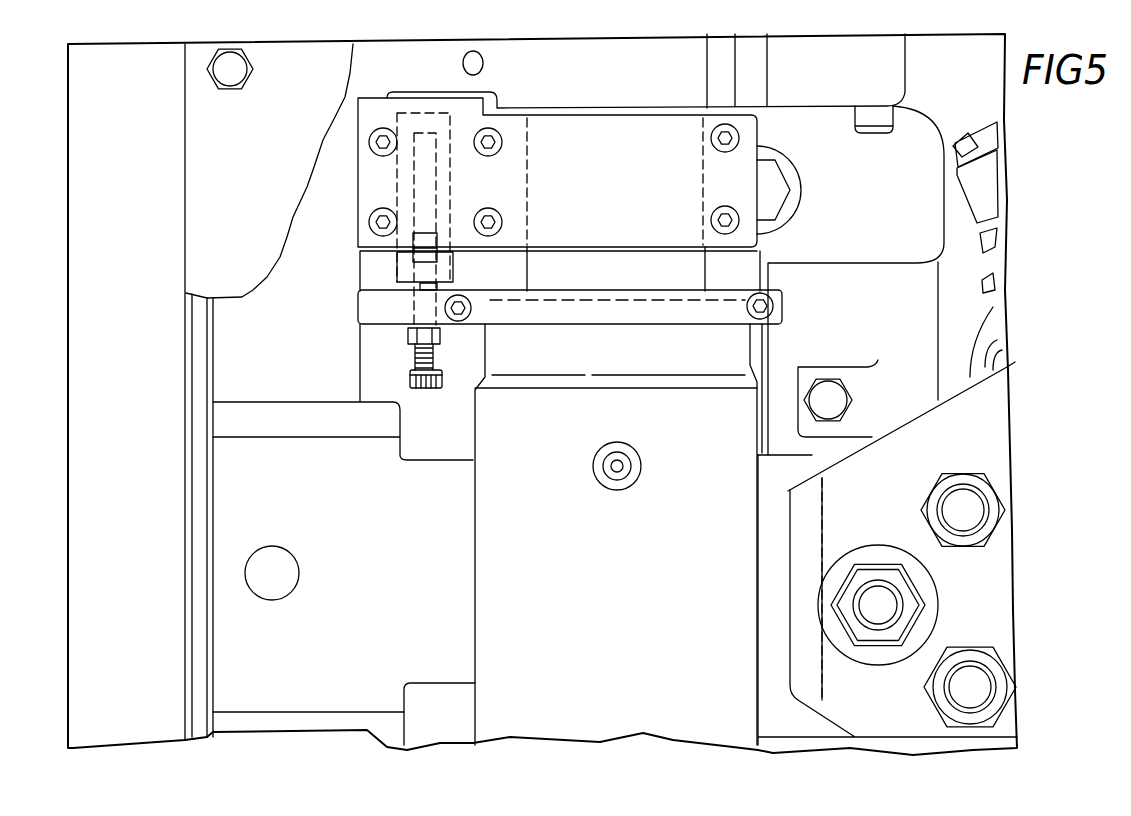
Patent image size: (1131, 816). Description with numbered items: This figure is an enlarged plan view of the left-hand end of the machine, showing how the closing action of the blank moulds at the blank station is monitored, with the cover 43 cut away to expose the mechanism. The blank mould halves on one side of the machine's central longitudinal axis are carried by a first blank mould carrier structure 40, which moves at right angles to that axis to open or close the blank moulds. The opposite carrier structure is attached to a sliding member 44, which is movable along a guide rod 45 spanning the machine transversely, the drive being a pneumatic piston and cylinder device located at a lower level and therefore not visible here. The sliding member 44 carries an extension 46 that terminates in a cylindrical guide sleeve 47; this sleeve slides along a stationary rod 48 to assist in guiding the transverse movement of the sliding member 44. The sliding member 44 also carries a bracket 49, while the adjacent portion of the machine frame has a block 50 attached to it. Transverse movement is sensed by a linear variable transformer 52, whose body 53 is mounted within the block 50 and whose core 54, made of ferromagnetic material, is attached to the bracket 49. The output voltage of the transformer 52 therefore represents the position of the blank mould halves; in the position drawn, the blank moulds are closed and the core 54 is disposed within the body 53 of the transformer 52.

The first blank mould carrier structure 40 is at (986, 445).
The cover 43 is at (293, 58).
The sliding member 44 is at (618, 569).
The guide rod 45 is at (689, 262).
The extension 46 is at (428, 478).
The cylindrical guide sleeve 47 is at (280, 450).
The stationary rod 48 is at (227, 340).
The bracket 49 is at (616, 308).
The block 50 is at (620, 130).
The linear variable transformer 52 is at (380, 267).
The body 53 is at (446, 193).
The core 54 is at (420, 170).